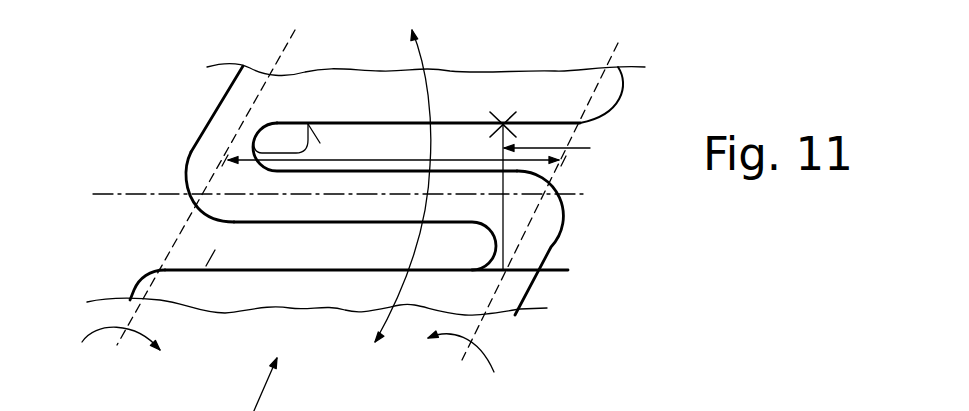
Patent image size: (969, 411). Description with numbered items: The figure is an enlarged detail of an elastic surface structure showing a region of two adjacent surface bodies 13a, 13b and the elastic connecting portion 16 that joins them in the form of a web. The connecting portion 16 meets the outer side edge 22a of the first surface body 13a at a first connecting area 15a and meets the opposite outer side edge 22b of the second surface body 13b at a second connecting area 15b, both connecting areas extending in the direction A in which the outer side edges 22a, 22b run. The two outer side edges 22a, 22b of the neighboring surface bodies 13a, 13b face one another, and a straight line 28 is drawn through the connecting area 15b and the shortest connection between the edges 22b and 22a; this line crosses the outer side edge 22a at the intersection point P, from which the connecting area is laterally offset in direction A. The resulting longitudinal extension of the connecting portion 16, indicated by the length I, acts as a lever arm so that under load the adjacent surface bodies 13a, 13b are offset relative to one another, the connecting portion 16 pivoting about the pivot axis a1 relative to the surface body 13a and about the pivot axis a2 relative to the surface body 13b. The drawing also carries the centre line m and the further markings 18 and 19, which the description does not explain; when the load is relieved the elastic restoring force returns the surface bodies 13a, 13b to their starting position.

The first surface body 13a is at (315, 110).
The second surface body 13b is at (273, 302).
The first connecting area 15a is at (196, 170).
The second connecting area 15b is at (549, 245).
The connecting portion 16 is at (374, 205).
The movement direction / path 18 is at (240, 197).
The hairpin leg 19 is at (361, 178).
The outer side edge of first surface body 22a is at (256, 146).
The outer side edge of second surface body 22b is at (207, 262).
The straight line 28 is at (503, 212).
The intersection point P is at (510, 121).
The length I is at (446, 160).
The direction A is at (555, 147).
The center line m is at (586, 196).
The first pivot axis a1 is at (121, 347).
The second pivot axis a2 is at (461, 357).